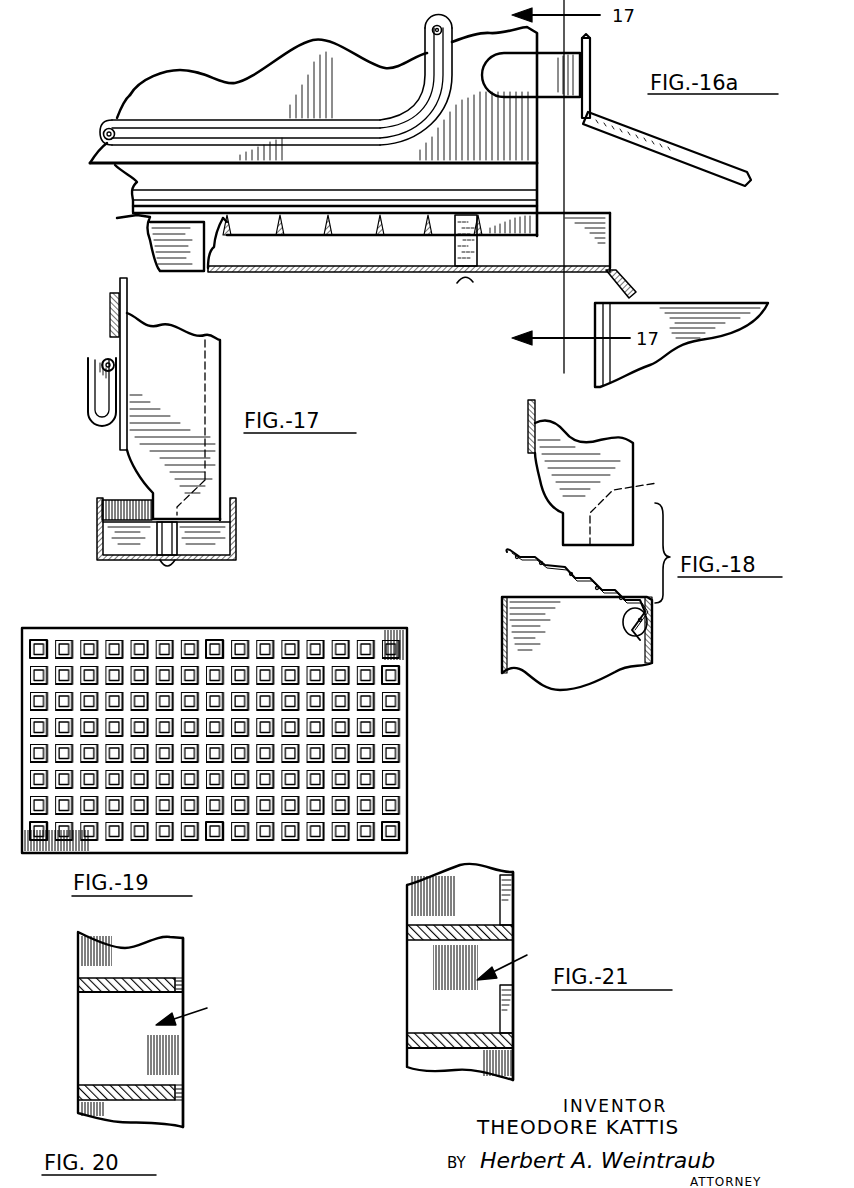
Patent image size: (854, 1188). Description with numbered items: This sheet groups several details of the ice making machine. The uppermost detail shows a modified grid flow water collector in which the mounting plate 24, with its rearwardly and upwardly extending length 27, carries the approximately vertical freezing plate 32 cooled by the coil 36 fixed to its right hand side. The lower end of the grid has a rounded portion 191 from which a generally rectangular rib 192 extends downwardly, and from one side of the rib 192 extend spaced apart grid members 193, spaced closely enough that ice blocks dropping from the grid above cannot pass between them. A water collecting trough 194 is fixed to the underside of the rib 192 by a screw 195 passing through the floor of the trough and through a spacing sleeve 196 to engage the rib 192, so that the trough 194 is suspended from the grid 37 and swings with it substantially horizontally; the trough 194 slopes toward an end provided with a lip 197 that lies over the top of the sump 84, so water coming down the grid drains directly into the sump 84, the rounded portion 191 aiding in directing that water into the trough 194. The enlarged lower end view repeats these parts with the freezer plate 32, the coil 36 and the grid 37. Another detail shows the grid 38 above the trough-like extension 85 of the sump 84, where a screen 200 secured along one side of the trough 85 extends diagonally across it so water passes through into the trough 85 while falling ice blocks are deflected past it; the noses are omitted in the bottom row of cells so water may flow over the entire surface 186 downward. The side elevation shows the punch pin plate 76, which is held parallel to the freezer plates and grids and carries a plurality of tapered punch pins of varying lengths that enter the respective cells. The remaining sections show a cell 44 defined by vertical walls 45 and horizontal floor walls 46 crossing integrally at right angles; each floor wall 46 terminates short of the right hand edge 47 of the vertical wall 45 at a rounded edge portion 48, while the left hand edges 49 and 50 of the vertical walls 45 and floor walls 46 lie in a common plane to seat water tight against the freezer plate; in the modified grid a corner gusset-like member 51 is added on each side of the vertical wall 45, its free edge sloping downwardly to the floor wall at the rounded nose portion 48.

In FIG. 16A, the mounting plate 24 is at (590, 76).
In FIG. 16A, the rearwardly and upwardly extending length of the mounting plate 27 is at (693, 132).
In FIG. 16A, the freezing plate 32 is at (360, 70).
In FIG. 17, the freezing plate 32 is at (122, 287).
In FIG. 18, the freezing plate 32 is at (530, 425).
In FIG. 16A, the coil 36 is at (142, 132).
In FIG. 17, the coil 36 is at (93, 402).
In FIG. 17, the grid 37 is at (200, 397).
In FIG. 18, the grid 38 is at (627, 458).
In FIG. 20, the cell 44 is at (85, 1033).
In FIG. 21, the cell 44 is at (422, 992).
In FIG. 20, the vertical wall 45 is at (192, 1011).
In FIG. 21, the vertical wall 45 is at (512, 959).
In FIG. 21, the floor wall 46 is at (420, 942).
In FIG. 20, the right hand edge of the vertical wall 47 is at (183, 1058).
In FIG. 21, the right hand edge of the vertical wall 47 is at (513, 1068).
In FIG. 20, the rounded edge portion 48 is at (184, 985).
In FIG. 21, the rounded edge portion 48 is at (513, 1041).
In FIG. 20, the left hand edge of the vertical wall 49 is at (78, 955).
In FIG. 21, the left hand edge of the vertical wall 49 is at (407, 910).
In FIG. 20, the left hand edge of the floor wall 50 is at (78, 985).
In FIG. 21, the left hand edge of the floor wall 50 is at (407, 929).
In FIG. 21, the corner gusset-like member 51 is at (507, 904).
In FIG. 19, the punch pin plate 76 is at (298, 634).
In FIG. 16A, the sump 84 is at (740, 313).
In FIG. 18, the trough-like extension 85 is at (513, 633).
In FIG. 18, the surface 186 is at (642, 508).
In FIG. 16A, the rounded portion 191 is at (140, 180).
In FIG. 17, the rounded portion 191 is at (147, 468).
In FIG. 16A, the rib 192 is at (356, 227).
In FIG. 17, the rib 192 is at (167, 510).
In FIG. 16A, the grid members 193 is at (317, 235).
In FIG. 17, the grid members 193 is at (112, 520).
In FIG. 16A, the water collecting trough 194 is at (412, 250).
In FIG. 17, the water collecting trough 194 is at (236, 547).
In FIG. 16A, the screw 195 is at (466, 283).
In FIG. 17, the screw 195 is at (172, 564).
In FIG. 16A, the spacing sleeve 196 is at (477, 253).
In FIG. 17, the spacing sleeve 196 is at (163, 543).
In FIG. 16A, the lip 197 is at (632, 284).
In FIG. 18, the screen 200 is at (533, 553).